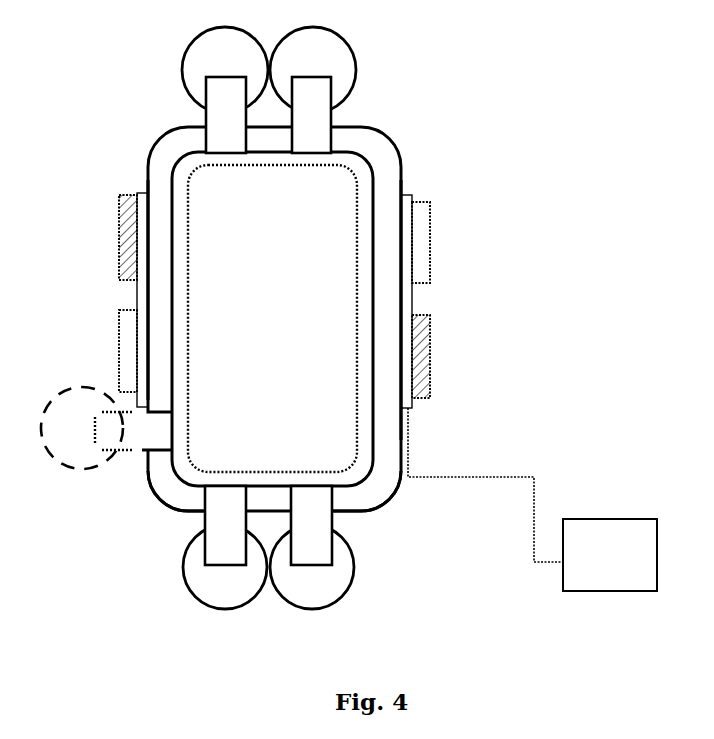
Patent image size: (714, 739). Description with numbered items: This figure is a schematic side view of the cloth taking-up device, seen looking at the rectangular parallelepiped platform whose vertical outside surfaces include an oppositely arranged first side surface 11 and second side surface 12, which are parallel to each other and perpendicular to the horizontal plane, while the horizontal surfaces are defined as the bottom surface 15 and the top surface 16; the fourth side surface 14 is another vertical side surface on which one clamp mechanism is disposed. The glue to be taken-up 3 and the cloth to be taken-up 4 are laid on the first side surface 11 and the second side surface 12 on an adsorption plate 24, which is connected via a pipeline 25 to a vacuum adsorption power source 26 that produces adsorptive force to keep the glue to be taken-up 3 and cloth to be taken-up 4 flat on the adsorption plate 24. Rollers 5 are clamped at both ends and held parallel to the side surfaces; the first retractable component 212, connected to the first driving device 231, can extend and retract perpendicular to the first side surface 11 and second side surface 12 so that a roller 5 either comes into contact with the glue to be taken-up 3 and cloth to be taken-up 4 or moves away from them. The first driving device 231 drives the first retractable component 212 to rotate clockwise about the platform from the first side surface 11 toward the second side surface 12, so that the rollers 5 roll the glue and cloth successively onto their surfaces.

The glue to be taken-up 3 is at (125, 366).
The cloth to be taken-up 4 is at (118, 228).
The roller 5 is at (311, 586).
The first side surface 11 is at (147, 178).
The second side surface 12 is at (403, 194).
The fourth side surface 14 is at (377, 490).
The bottom surface 15 is at (185, 514).
The top surface 16 is at (352, 126).
The adsorption plate 24 is at (142, 300).
The pipeline 25 is at (464, 474).
The vacuum adsorption power source 26 is at (616, 541).
The first retractable component 212 is at (312, 100).
The first driving device 231 is at (358, 172).